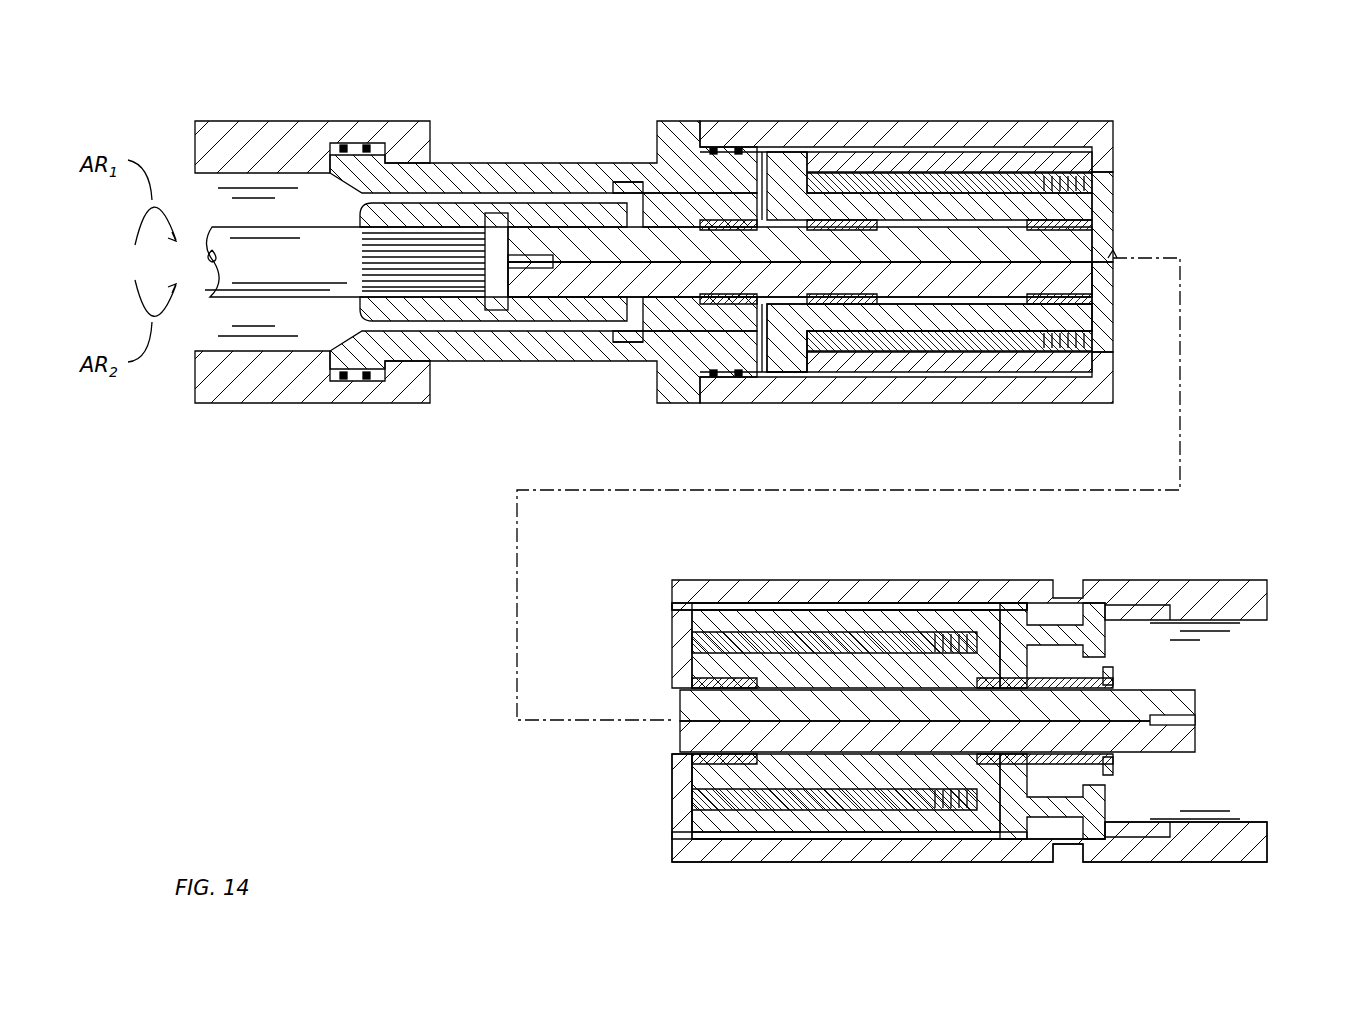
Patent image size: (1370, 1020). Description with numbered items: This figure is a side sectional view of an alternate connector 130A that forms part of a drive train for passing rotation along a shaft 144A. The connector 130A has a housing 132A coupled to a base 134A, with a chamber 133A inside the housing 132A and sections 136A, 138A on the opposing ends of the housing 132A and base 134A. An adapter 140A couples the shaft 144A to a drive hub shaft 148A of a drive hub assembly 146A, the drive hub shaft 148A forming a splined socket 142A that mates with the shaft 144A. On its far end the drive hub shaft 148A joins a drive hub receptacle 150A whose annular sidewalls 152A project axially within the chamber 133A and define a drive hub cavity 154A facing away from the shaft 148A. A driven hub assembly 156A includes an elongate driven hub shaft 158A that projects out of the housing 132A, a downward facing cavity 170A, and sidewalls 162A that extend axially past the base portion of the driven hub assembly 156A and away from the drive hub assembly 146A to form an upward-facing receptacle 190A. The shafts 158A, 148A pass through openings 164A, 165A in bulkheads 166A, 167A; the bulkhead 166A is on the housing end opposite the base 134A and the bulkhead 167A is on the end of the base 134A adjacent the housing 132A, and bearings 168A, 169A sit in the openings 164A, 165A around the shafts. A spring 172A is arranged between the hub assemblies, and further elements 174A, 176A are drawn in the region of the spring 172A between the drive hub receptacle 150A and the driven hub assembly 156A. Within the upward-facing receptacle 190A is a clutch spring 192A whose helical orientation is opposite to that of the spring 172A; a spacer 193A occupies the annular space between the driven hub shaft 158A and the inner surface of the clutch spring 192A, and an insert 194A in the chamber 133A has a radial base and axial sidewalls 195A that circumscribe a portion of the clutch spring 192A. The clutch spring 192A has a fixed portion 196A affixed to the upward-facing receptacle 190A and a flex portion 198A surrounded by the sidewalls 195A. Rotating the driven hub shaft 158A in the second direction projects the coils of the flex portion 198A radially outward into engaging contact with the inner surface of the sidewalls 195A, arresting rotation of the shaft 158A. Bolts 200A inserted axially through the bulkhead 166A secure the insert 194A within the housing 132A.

The connector 130A is at (842, 64).
The housing 132A is at (928, 121).
The chamber 133A is at (677, 622).
The base 134A is at (433, 121).
The section 136A is at (1263, 580).
The section 138A is at (262, 120).
The adapter 140A is at (470, 205).
The splined socket 142A is at (427, 215).
The shaft 144A is at (315, 266).
The drive hub assembly 146A is at (760, 318).
The drive hub shaft 148A is at (690, 273).
The drive hub receptacle 150A is at (770, 155).
The annular sidewalls 152A is at (790, 150).
The drive hub cavity 154A is at (925, 216).
The driven hub assembly 156A is at (743, 594).
The driven hub shaft 158A is at (1165, 698).
The sidewalls 162A is at (1055, 160).
The opening 164A is at (1134, 685).
The opening 165A is at (640, 298).
The bulkhead 166A is at (1103, 655).
The bulkhead 167A is at (657, 317).
The bearing 168A is at (1112, 765).
The bearing 169A is at (700, 220).
The cavity 170A is at (946, 290).
The spring 172A is at (840, 330).
The inner body 174A is at (960, 312).
The threaded zone 176A is at (905, 172).
The upward-facing receptacle 190A is at (788, 674).
The clutch spring 192A is at (697, 808).
The spacer 193A is at (875, 680).
The insert 194A is at (1021, 591).
The sidewalls 195A is at (937, 823).
The fixed portion 196A is at (752, 815).
The flex portion 198A is at (862, 815).
The bolts 200A is at (1055, 812).